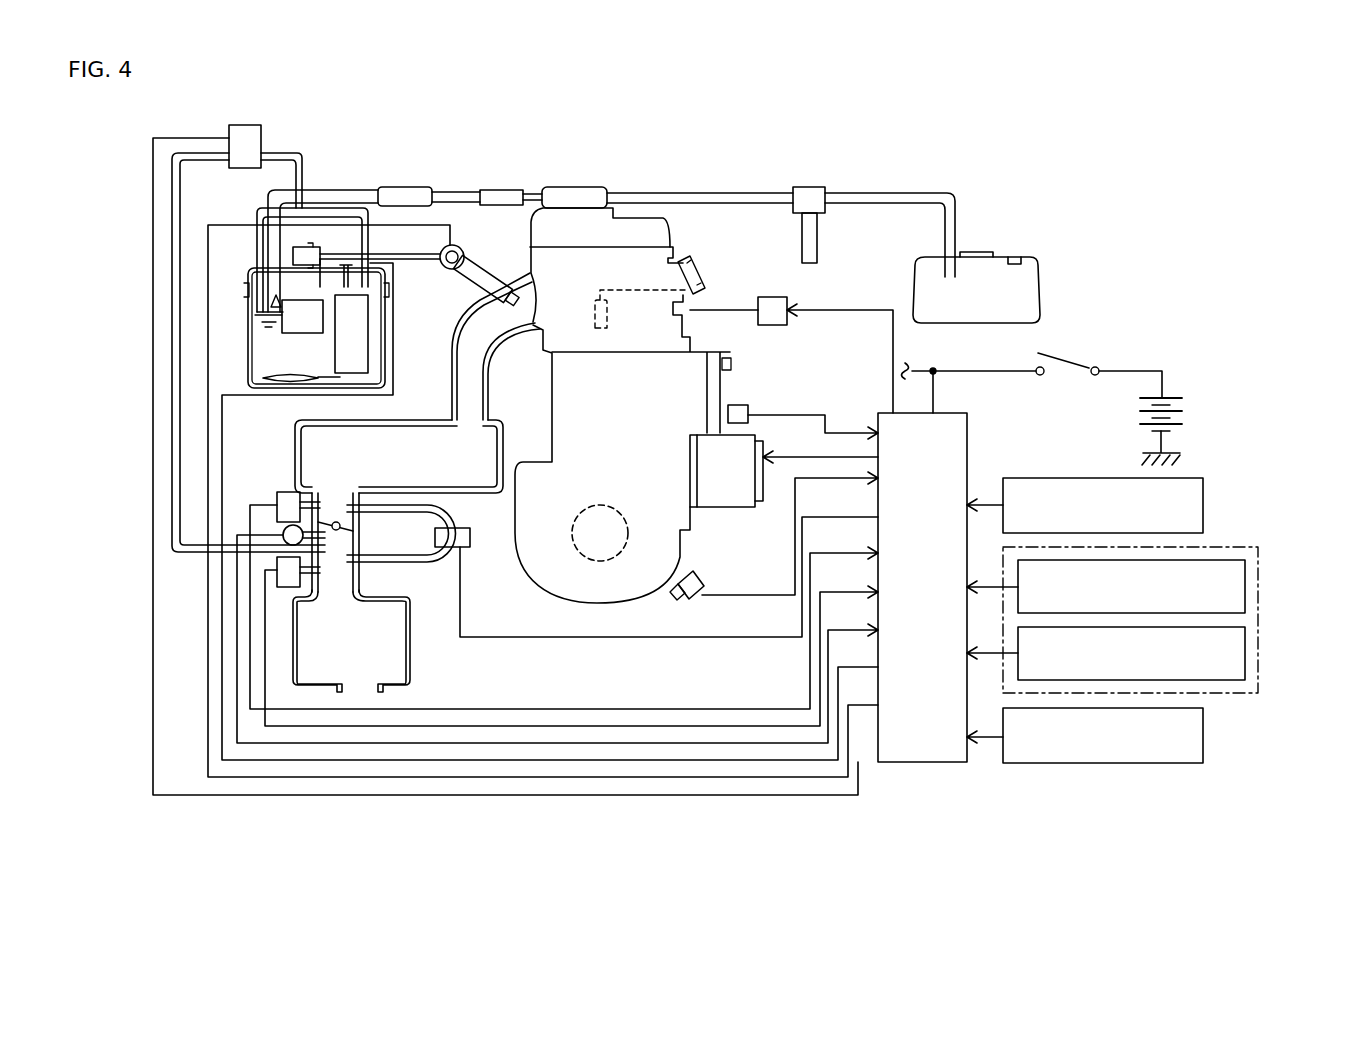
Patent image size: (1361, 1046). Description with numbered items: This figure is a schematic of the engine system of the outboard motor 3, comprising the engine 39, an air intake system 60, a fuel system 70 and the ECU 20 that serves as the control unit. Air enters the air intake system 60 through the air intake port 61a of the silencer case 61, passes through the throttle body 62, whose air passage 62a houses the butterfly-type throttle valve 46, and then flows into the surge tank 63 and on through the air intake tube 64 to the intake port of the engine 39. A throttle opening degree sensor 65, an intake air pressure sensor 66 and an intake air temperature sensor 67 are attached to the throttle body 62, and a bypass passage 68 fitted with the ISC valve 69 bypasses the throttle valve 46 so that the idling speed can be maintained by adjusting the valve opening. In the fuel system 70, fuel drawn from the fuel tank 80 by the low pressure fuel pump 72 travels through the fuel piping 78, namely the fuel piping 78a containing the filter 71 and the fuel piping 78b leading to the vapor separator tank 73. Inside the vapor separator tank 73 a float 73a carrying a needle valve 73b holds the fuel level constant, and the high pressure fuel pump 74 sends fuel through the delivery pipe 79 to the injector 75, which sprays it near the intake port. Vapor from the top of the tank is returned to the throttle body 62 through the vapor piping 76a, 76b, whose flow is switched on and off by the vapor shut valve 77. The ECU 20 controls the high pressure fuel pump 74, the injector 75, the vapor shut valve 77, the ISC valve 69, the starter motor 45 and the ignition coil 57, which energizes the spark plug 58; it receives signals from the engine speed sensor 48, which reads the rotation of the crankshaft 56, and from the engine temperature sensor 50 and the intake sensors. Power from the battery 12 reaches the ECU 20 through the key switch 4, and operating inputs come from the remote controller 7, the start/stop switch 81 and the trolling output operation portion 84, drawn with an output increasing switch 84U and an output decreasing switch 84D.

The engine 3 is at (996, 190).
The key switch 4 is at (1058, 353).
The remote controller 7 is at (1204, 737).
The battery 12 is at (1182, 402).
The ECU 20 is at (968, 444).
The engine 39 is at (757, 373).
The starter motor 45 is at (727, 497).
The throttle valve 46 is at (331, 510).
The engine speed sensor 48 is at (703, 582).
The engine temperature sensor 50 is at (748, 418).
The crankshaft 56 is at (602, 505).
The ignition coil 57 is at (770, 297).
The spark plug 58 is at (593, 318).
The air intake system 60 is at (430, 588).
The silencer case 61 is at (411, 666).
The air intake port 61a is at (362, 698).
The throttle body 62 is at (365, 538).
The air passage 62a is at (358, 597).
The surge tank 63 is at (293, 455).
The air intake tube 64 is at (488, 375).
The throttle opening degree sensor 65 is at (285, 532).
The intake air pressure sensor 66 is at (277, 499).
The intake air temperature sensor 67 is at (277, 563).
The bypass passage 68 is at (456, 513).
The ISC valve 69 is at (468, 548).
The fuel system 70 is at (427, 124).
The filter 71 is at (810, 187).
The low pressure fuel pump 72 is at (575, 187).
The vapor separator tank 73 is at (250, 358).
The float 73a is at (303, 333).
The needle valve 73b is at (271, 304).
The high pressure fuel pump 74 is at (360, 333).
The injector 75 is at (480, 266).
The vapor piping 76a is at (299, 152).
The vapor piping 76b is at (172, 232).
The vapor shut valve 77 is at (245, 125).
The fuel piping 78 is at (323, 251).
The fuel piping 78a is at (672, 192).
The fuel piping 78b is at (500, 190).
The delivery pipe 79 is at (442, 247).
The fuel tank 80 is at (1040, 295).
The start/stop switch 81 is at (1204, 506).
The trolling output operation portion 84 is at (1259, 636).
The output increasing switch 84U is at (1245, 596).
The output decreasing switch 84D is at (1245, 669).